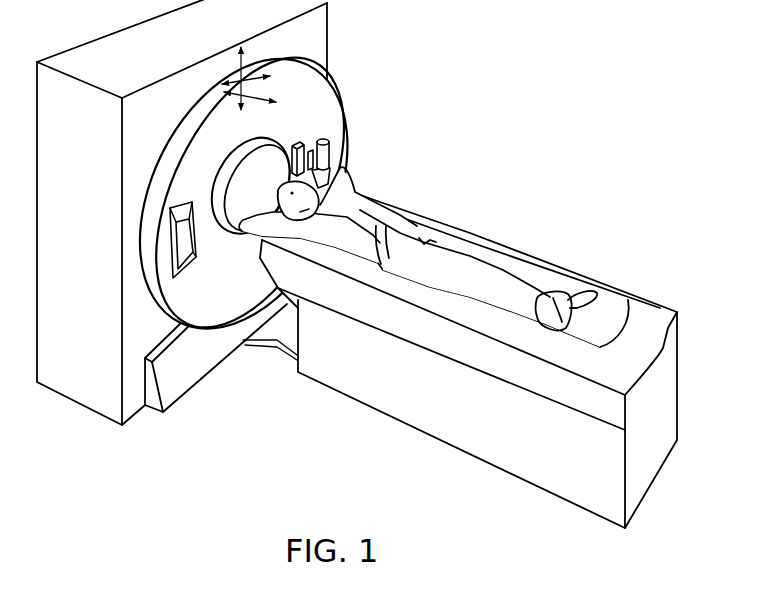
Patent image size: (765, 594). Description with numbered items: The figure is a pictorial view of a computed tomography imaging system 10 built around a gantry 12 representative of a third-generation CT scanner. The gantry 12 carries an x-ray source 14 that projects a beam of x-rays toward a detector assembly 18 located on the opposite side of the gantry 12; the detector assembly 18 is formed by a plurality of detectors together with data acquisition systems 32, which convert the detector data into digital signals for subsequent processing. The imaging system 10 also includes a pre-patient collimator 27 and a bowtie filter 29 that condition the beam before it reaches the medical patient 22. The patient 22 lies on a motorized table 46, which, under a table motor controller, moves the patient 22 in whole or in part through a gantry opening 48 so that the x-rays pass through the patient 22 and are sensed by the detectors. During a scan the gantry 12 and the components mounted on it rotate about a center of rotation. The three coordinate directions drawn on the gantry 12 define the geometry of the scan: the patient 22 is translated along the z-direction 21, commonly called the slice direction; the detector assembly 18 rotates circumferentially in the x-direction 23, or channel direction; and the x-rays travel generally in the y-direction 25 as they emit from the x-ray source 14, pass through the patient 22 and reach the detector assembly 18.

The CT imaging system 10 is at (497, 142).
The gantry 12 is at (300, 103).
The x-ray source 14 is at (331, 151).
The detector assembly 18 is at (186, 265).
The z-direction 21 is at (236, 80).
The medical patient 22 is at (394, 211).
The x-direction 23 is at (250, 94).
The y-direction 25 is at (238, 64).
The pre-patient collimator 27 is at (323, 182).
The bowtie filter 29 is at (300, 140).
The data acquisition system 32 is at (186, 207).
The motorized table 46 is at (440, 426).
The gantry opening 48 is at (238, 176).